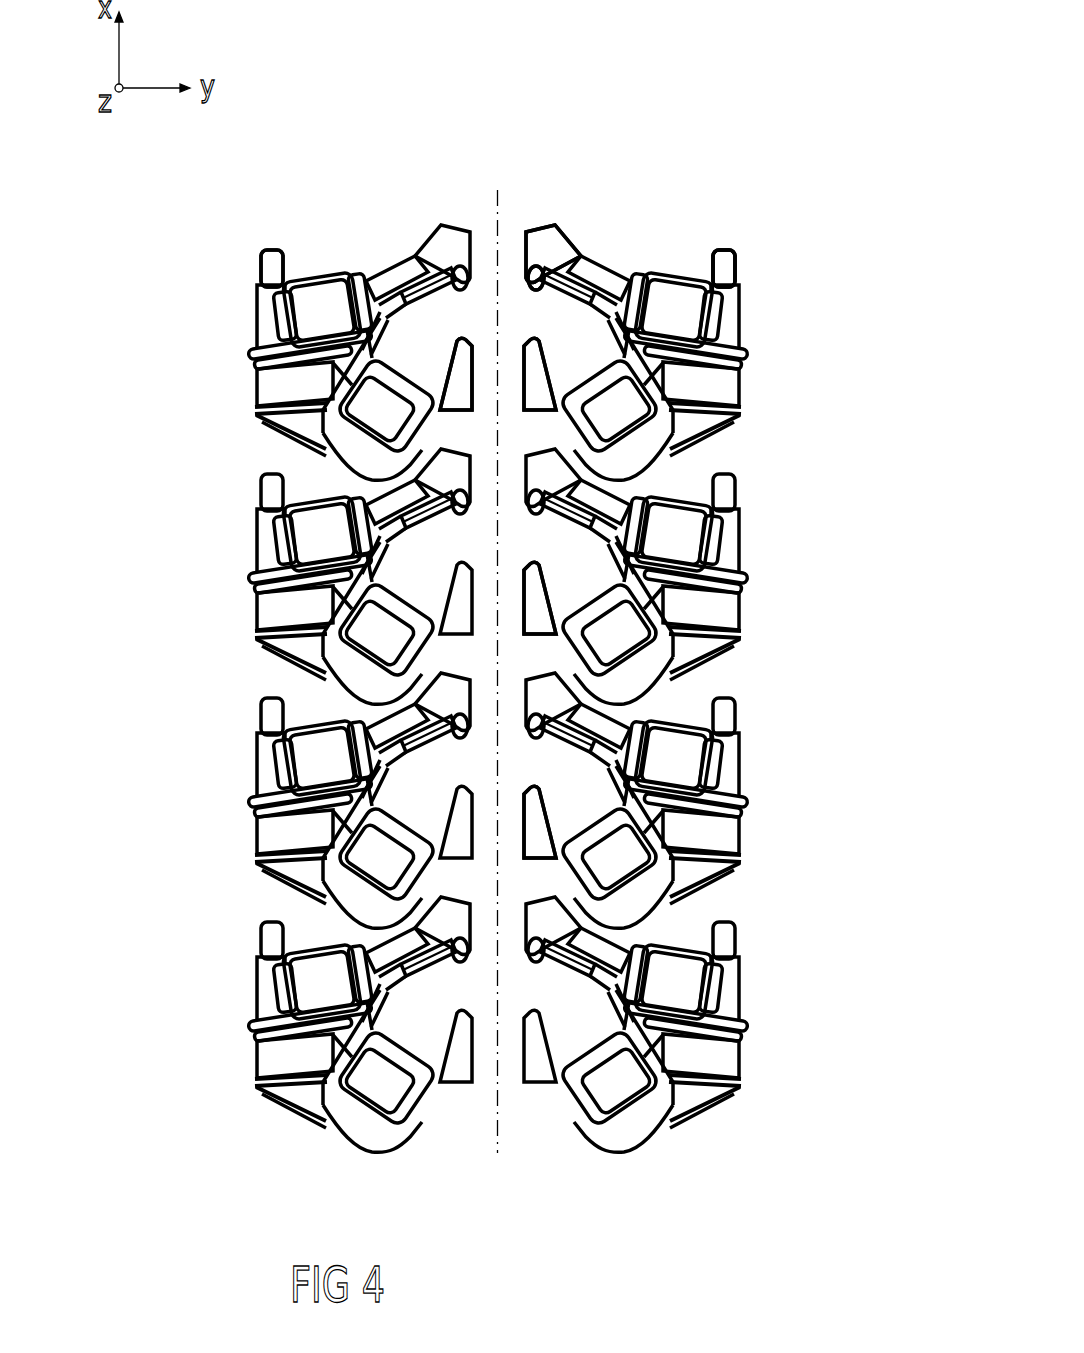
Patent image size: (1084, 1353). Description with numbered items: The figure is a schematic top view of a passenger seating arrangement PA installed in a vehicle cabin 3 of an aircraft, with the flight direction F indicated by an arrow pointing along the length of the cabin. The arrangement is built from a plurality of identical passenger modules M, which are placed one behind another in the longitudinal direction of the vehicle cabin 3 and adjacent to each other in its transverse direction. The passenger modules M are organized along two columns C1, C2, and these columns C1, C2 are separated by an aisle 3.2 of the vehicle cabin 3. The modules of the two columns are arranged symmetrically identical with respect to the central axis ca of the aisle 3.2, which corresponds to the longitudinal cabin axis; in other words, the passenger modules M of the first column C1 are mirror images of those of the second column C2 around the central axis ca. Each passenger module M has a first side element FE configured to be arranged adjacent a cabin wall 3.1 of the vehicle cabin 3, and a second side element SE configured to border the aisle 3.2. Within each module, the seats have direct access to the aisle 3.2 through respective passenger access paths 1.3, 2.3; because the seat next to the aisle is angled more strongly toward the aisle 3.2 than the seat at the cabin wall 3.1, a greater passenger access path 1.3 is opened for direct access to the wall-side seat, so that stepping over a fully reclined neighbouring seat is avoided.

The passenger seating arrangement PA is at (800, 138).
The vehicle cabin 3 is at (713, 136).
The cabin wall 3.1 is at (741, 258).
The aisle 3.2 is at (516, 224).
The first column C1 is at (403, 158).
The second column C2 is at (616, 158).
The passenger module M is at (212, 366).
The first side element FE is at (242, 311).
The second side element SE is at (473, 378).
The passenger access path 1.3 is at (544, 435).
The passenger access path 2.3 is at (544, 543).
The central axis ca is at (498, 1148).
The flight direction F is at (497, 85).